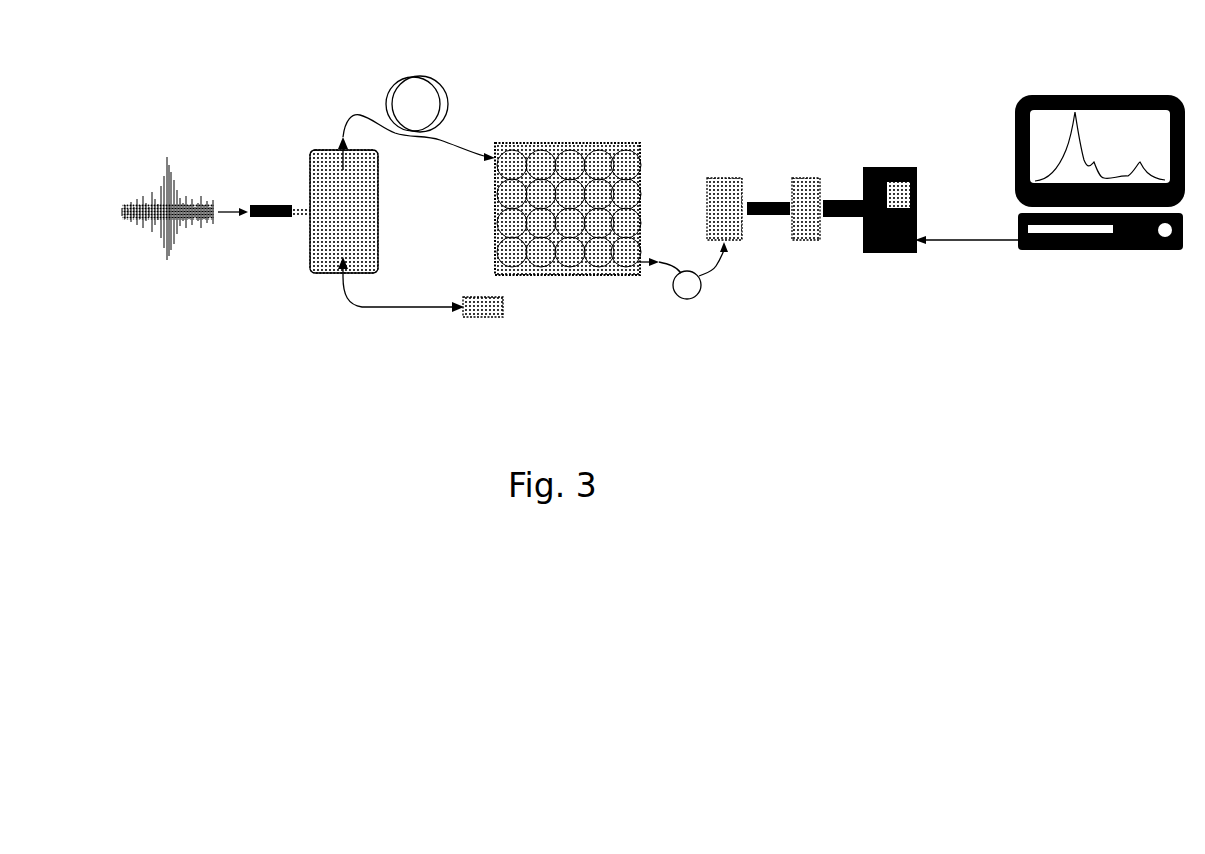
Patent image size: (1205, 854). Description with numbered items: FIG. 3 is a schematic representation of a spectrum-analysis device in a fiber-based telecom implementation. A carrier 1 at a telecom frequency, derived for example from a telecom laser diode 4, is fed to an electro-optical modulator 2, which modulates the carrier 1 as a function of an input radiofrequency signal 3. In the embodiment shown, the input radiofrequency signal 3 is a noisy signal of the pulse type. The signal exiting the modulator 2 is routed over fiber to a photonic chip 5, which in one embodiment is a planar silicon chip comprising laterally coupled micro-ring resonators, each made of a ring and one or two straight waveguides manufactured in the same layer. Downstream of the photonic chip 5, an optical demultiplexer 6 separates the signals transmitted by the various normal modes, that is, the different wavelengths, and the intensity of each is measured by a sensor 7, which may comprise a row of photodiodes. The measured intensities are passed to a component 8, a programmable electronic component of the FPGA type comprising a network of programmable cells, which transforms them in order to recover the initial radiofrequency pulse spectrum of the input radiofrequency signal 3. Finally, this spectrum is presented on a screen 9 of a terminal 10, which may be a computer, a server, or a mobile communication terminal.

The carrier 1 is at (373, 320).
The electro-optical modulator 2 is at (316, 152).
The input radiofrequency signal 3 is at (158, 240).
The telecom laser diode 4 is at (515, 315).
The photonic chip 5 is at (563, 134).
The optical demultiplexer 6 is at (729, 163).
The sensor 7 is at (812, 163).
The component 8 is at (893, 254).
The screen 9 is at (1107, 135).
The terminal 10 is at (1078, 260).